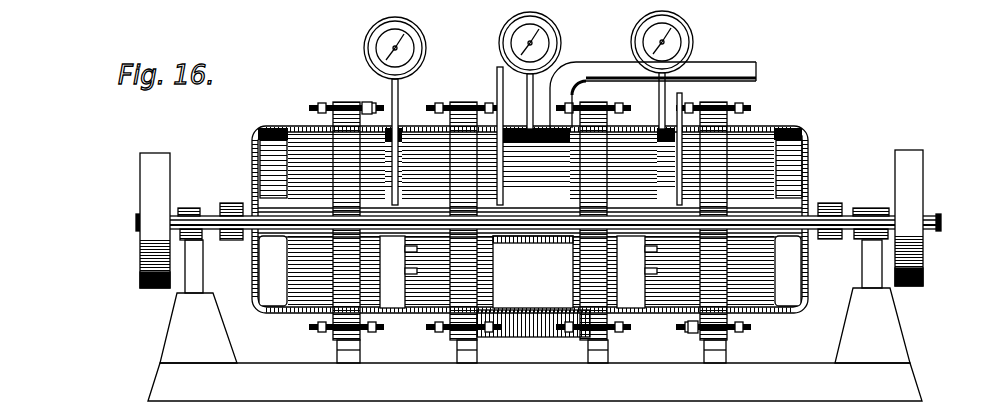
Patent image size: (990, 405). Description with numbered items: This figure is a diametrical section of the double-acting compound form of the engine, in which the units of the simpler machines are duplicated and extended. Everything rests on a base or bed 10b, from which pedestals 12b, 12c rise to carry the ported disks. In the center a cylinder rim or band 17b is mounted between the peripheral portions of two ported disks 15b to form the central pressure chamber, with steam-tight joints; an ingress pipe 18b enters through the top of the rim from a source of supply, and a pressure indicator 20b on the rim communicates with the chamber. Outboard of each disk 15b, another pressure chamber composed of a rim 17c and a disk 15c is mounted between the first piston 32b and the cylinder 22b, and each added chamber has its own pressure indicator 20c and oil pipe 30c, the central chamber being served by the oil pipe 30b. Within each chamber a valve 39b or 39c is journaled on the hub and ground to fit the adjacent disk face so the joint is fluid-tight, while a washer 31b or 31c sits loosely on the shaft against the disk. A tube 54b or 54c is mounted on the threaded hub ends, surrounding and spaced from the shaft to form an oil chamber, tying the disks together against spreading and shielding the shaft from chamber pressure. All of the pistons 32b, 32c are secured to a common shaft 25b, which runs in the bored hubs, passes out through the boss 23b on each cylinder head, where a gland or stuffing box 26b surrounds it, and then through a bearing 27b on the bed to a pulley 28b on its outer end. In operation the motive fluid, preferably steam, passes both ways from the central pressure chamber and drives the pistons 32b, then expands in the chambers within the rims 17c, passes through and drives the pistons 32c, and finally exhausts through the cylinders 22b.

The base or bed 10b is at (535, 320).
The pedestal 12b is at (600, 363).
The pedestal 12c is at (715, 363).
The ported end plate or disk 15b is at (453, 340).
The ported disk 15c is at (348, 104).
The cylinder rim or band 17b is at (465, 363).
The rim 17c is at (415, 125).
The ingress pipe 18b is at (744, 67).
The pressure indicator 20b is at (500, 30).
The pressure indicator 20c is at (366, 38).
The cylinder 22b is at (277, 126).
The hub or boss 23b is at (230, 240).
The shaft 25b is at (136, 222).
The gland or stuffing box 26b is at (228, 197).
The bearing 27b is at (188, 208).
The pulley 28b is at (153, 163).
The oil pipe 30b is at (497, 73).
The oil pipe 30c is at (399, 96).
The washer 31b is at (407, 264).
The washer 31c is at (293, 256).
The piston 32b is at (442, 112).
The piston 32c is at (293, 131).
The valve 39b is at (577, 301).
The valve 39c is at (381, 104).
The tube 54b is at (527, 244).
The tube 54c is at (396, 240).